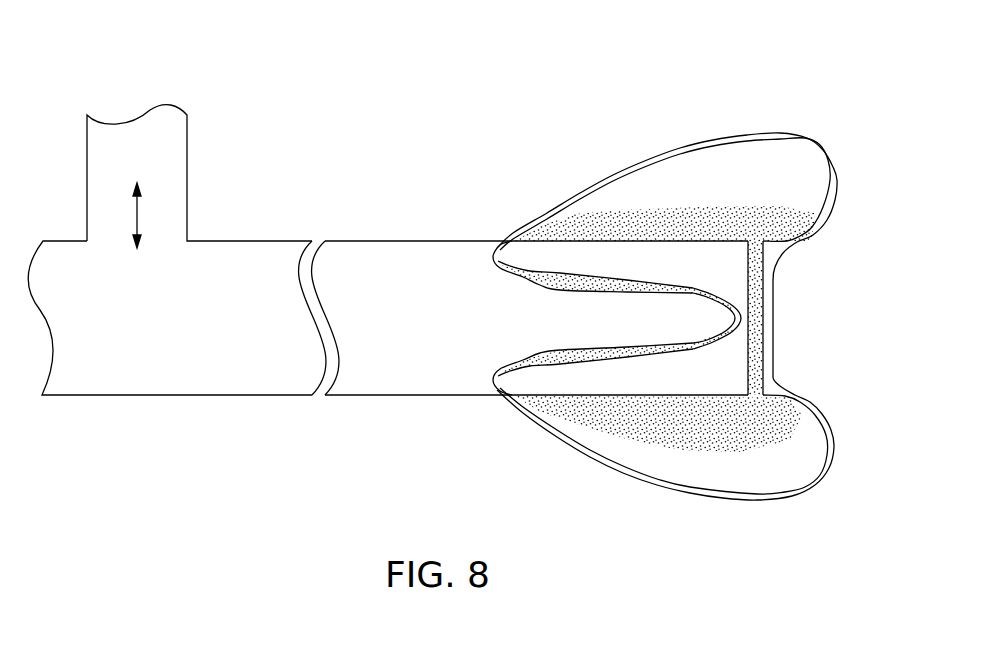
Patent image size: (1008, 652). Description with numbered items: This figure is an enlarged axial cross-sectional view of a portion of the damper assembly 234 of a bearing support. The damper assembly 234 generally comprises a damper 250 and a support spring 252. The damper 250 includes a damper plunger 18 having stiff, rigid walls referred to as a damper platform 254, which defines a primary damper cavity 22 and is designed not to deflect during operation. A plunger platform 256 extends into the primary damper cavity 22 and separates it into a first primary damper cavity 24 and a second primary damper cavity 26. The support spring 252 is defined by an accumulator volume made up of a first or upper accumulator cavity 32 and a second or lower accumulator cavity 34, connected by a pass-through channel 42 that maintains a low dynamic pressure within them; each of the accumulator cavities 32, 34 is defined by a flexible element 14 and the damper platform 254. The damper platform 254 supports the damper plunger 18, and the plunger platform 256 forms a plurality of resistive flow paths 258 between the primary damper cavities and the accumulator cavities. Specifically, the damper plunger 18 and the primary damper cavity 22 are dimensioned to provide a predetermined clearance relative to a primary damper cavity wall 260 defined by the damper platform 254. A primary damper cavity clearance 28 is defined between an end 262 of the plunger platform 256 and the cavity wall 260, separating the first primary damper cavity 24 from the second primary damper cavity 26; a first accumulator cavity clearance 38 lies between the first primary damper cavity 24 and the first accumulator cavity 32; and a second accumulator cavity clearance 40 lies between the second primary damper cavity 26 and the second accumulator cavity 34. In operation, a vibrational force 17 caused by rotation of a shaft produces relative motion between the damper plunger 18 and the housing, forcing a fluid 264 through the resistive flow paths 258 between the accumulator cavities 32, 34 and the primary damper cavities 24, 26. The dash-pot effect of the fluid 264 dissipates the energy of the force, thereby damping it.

The flexible element 14 is at (738, 135).
The vibrational force 17 is at (140, 216).
The damper plunger 18 is at (257, 241).
The primary damper cavity 22 is at (539, 334).
The first primary damper cavity 24 is at (547, 277).
The second primary damper cavity 26 is at (558, 353).
The primary damper cavity clearance 28 is at (738, 320).
The first accumulator cavity 32 is at (678, 160).
The second accumulator cavity 34 is at (755, 478).
The first accumulator cavity clearance 38 is at (495, 253).
The second accumulator cavity clearance 40 is at (497, 382).
The pass-through channel 42 is at (757, 265).
The damper assembly 234 is at (216, 62).
The damper 250 is at (427, 138).
The support spring 252 is at (808, 82).
The damper platform 254 is at (612, 248).
The plunger platform 256 is at (368, 375).
The resistive flow paths 258 is at (629, 330).
The primary damper cavity wall 260 is at (570, 270).
The end of the plunger platform 262 is at (720, 320).
The fluid 264 is at (798, 222).